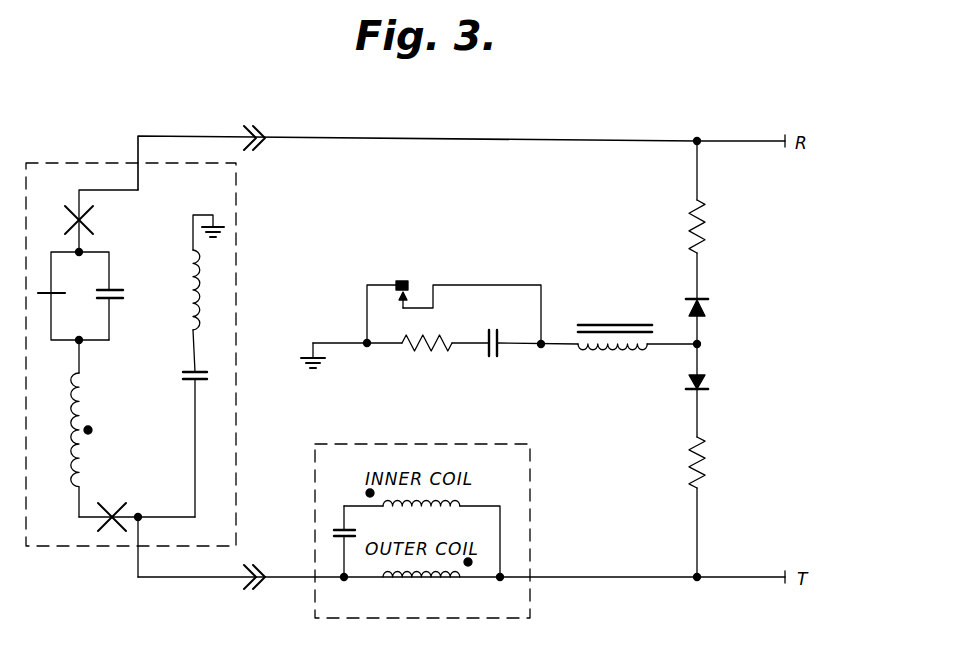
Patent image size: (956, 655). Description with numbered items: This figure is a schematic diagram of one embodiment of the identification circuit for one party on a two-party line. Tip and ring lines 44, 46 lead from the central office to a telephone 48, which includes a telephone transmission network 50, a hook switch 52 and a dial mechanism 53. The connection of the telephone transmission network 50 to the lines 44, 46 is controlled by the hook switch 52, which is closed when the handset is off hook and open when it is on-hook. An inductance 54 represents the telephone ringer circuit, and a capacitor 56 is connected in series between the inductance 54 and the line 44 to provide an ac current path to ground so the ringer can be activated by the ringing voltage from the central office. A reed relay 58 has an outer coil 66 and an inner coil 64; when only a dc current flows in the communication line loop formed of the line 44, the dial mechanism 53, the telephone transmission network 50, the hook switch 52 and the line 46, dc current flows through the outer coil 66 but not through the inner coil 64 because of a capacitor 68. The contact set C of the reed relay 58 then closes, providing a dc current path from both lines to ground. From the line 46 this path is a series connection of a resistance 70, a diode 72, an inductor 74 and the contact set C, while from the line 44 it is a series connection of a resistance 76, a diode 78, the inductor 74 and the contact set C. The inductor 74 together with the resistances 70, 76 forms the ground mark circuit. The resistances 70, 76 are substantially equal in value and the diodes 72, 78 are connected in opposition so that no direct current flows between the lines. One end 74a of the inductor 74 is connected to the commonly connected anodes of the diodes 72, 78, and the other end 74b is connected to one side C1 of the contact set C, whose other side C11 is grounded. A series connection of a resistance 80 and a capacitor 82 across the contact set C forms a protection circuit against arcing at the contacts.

The tip line 44 is at (742, 578).
The ring line 46 is at (742, 140).
The telephone 48 is at (79, 163).
The telephone transmission network 50 is at (86, 450).
The hook switch 52 is at (84, 220).
The dial mechanism 53 is at (116, 312).
The inductance 54 is at (190, 276).
The capacitor 56 is at (188, 372).
The reed relay 58 is at (530, 481).
The inner coil 64 is at (455, 501).
The outer coil 66 is at (395, 582).
The capacitor 68 is at (334, 530).
The resistance 70 is at (706, 222).
The diode 72 is at (706, 310).
The inductor 74 is at (624, 351).
The end of inductor 74a is at (652, 340).
The other end of inductor 74b is at (578, 346).
The resistance 76 is at (706, 458).
The diode 78 is at (706, 382).
The resistance 80 is at (436, 350).
The capacitor 82 is at (492, 358).
The relay contact set C is at (420, 296).
The side of relay contact set C1 is at (394, 306).
The other side of relay contact set C11 is at (400, 278).